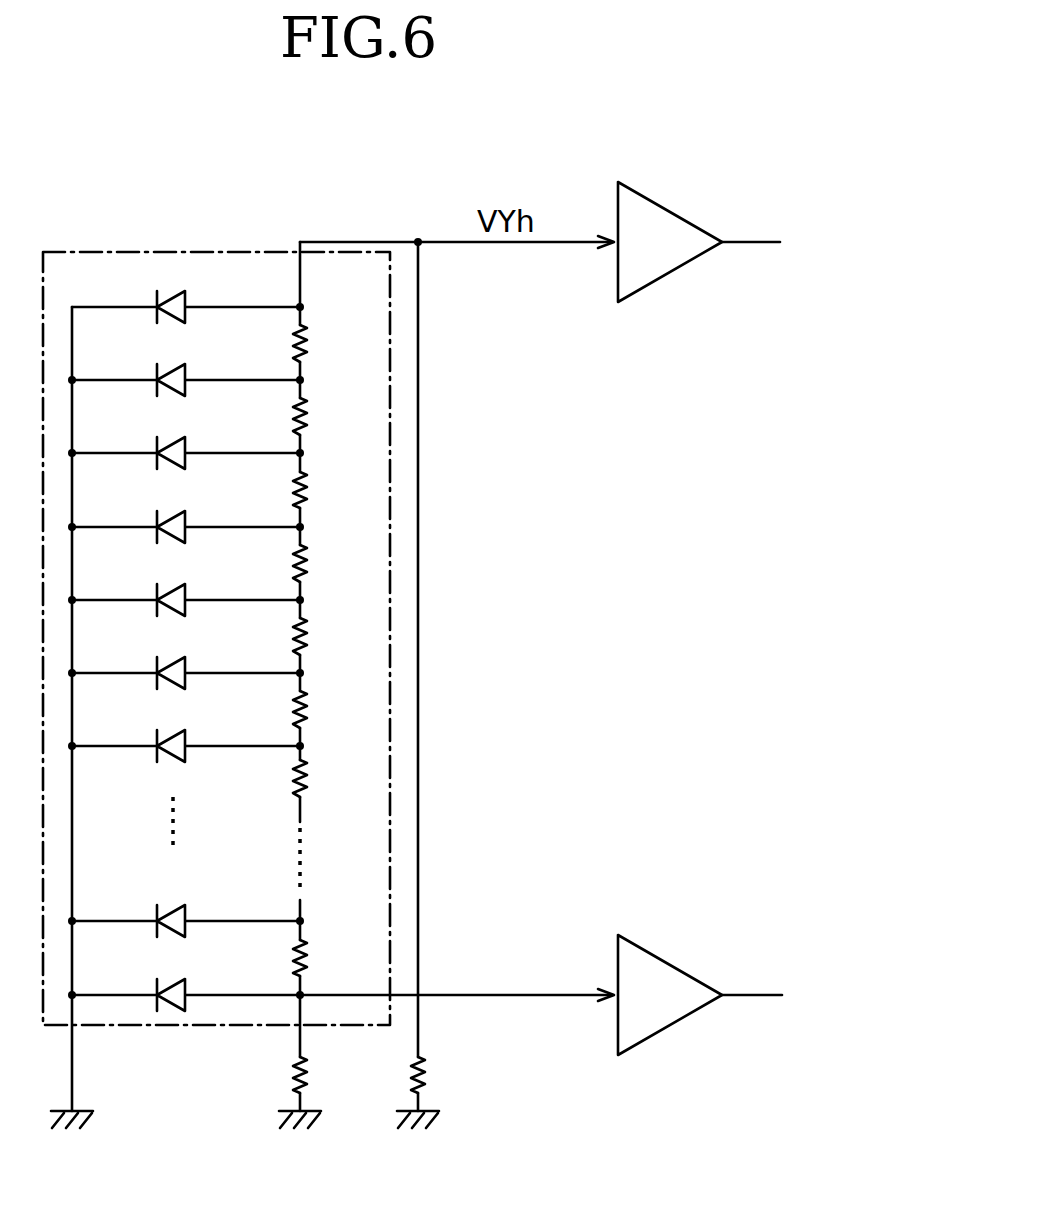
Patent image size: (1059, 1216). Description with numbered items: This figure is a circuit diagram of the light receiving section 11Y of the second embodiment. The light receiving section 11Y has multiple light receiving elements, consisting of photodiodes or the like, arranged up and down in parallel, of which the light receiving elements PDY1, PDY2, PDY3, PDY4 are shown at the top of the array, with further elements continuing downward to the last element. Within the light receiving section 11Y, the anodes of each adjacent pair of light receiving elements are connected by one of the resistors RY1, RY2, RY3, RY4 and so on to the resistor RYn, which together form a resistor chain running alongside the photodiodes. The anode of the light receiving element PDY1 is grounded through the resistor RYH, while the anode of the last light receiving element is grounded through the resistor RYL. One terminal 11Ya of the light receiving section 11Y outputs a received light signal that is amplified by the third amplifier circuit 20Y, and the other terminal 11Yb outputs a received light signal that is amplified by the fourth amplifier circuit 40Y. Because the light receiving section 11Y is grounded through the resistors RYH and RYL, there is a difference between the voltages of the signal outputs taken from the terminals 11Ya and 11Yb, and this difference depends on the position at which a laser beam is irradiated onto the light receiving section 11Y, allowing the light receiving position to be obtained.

The light receiving section 11Y is at (216, 632).
The one terminal 11Ya is at (348, 632).
The other terminal 11Yb is at (358, 995).
The third amplifier circuit 20Y is at (650, 205).
The fourth amplifier circuit 40Y is at (648, 955).
The light receiving element PDY1 is at (186, 288).
The light receiving element PDY2 is at (186, 361).
The light receiving element PDY3 is at (186, 434).
The light receiving element PDY4 is at (186, 508).
The resistor RY1 is at (333, 343).
The resistor RY2 is at (333, 416).
The resistor RY3 is at (333, 490).
The resistor RY4 is at (333, 563).
The resistor RYn is at (333, 958).
The resistor RYL is at (332, 1075).
The resistor RYH is at (446, 685).